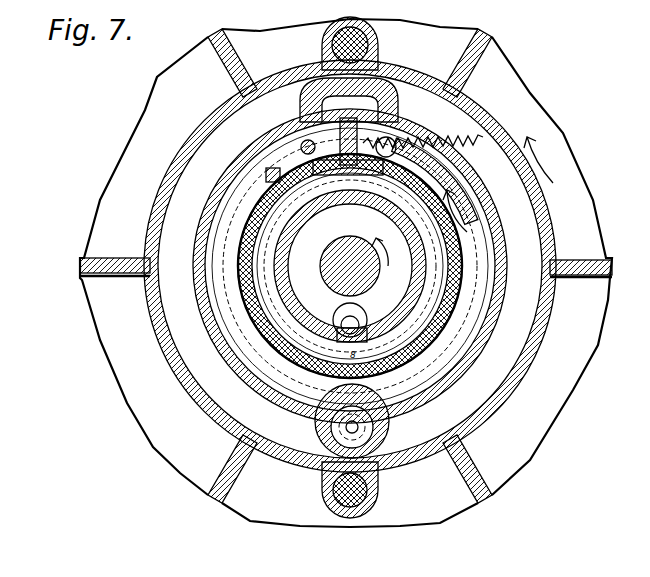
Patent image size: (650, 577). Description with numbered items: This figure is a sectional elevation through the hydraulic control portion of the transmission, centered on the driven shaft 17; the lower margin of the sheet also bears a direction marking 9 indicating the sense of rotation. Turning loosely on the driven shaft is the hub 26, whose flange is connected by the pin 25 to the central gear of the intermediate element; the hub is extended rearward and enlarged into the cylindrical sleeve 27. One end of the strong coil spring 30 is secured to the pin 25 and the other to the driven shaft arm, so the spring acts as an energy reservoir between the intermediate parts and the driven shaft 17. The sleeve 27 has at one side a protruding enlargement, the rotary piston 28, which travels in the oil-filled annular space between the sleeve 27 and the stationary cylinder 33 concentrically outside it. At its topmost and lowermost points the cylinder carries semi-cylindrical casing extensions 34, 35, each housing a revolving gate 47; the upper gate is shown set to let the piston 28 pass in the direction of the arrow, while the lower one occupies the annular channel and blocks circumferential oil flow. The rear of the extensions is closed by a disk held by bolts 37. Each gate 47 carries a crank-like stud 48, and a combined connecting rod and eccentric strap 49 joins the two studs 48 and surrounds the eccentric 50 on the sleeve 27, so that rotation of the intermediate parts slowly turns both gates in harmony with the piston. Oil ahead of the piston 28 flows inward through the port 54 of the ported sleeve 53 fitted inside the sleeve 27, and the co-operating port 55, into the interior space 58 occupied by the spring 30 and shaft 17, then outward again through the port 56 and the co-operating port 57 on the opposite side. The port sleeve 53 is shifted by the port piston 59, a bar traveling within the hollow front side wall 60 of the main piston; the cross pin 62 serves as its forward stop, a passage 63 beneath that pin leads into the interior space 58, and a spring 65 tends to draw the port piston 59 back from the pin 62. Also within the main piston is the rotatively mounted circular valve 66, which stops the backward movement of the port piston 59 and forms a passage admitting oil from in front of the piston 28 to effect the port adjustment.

The pawl 9 is at (318, 116).
The driven shaft 17 is at (350, 266).
The pin 25 is at (347, 328).
The hub 26 is at (303, 268).
The cylindrical sleeve 27 is at (262, 350).
The rotary piston 28 is at (272, 173).
The coil spring 30 is at (367, 318).
The stationary cylinder 33 is at (506, 264).
The upper casing extension 34 is at (388, 110).
The lower casing extension 35 is at (385, 440).
The bolts 37 is at (455, 392).
The revolving gate 47 is at (380, 82).
The stud 48 is at (320, 458).
The connecting rod and eccentric strap 49 is at (417, 400).
The eccentric 50 is at (432, 410).
The port sleeve 53 is at (207, 303).
The port 54 is at (292, 236).
The port 55 is at (248, 233).
The port 56 is at (457, 268).
The port 57 is at (457, 237).
The interior space 58 is at (337, 266).
The port piston 59 is at (330, 88).
The front side wall 60 is at (237, 152).
The cross pin 62 is at (285, 140).
The passage 63 is at (305, 182).
The spring 65 is at (470, 133).
The circular valve 66 is at (374, 240).